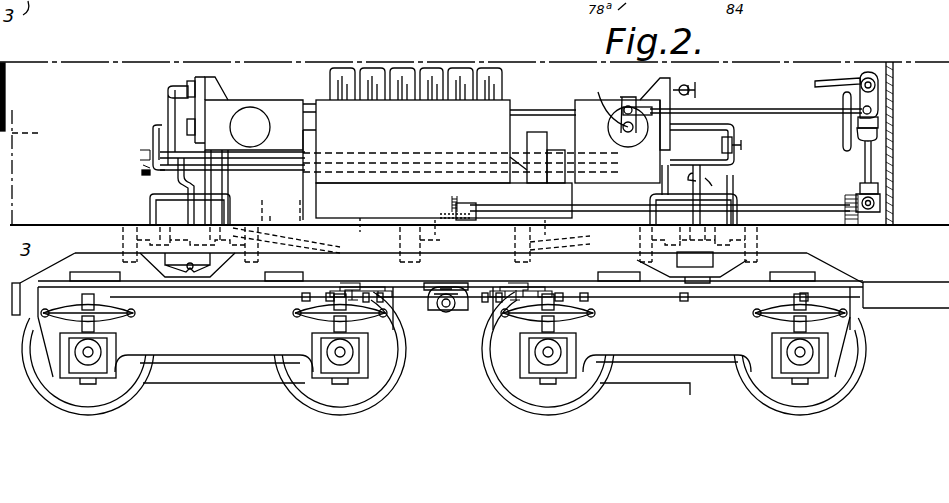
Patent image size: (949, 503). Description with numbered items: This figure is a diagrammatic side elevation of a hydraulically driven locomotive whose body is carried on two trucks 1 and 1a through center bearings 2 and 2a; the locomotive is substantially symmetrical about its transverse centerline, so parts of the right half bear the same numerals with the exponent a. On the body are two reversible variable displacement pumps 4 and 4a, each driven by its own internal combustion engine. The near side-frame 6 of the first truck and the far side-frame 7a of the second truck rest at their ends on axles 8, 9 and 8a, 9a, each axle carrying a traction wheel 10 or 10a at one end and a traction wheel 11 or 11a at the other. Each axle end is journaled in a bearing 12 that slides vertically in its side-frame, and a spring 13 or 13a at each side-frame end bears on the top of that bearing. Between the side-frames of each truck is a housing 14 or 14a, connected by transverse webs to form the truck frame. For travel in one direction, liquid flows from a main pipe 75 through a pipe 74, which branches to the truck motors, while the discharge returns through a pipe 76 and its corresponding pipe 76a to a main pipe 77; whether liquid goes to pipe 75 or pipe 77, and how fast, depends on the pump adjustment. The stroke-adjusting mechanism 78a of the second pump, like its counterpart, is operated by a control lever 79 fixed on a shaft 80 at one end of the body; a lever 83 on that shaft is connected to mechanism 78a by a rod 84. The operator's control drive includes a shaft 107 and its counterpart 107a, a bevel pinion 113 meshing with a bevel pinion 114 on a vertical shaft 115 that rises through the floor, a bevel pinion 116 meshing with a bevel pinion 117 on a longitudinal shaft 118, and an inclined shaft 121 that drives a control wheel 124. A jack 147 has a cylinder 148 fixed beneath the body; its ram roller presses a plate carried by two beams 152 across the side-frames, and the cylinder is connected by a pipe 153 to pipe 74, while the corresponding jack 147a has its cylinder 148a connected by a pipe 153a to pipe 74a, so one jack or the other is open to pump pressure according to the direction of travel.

The truck 1 is at (405, 326).
The truck 1a is at (478, 326).
The center bearing 2 is at (205, 280).
The center bearing 2a is at (705, 279).
The reversible variable displacement pump 4 is at (251, 113).
The reversible variable displacement pump 4a is at (481, 144).
The near side-frame 6 is at (214, 353).
The far side-frame 7a is at (667, 350).
The axle 8 is at (96, 354).
The axle 8a is at (790, 354).
The axle 9 is at (330, 354).
The axle 9a is at (558, 354).
The traction wheel 10 is at (296, 395).
The traction wheel 10a is at (590, 392).
The traction wheel 11 is at (40, 393).
The traction wheel 11a is at (850, 386).
The bearing 12 is at (96, 380).
The spring 13 is at (128, 320).
The spring 13a is at (590, 320).
The housing 14 is at (200, 388).
The housing 14a is at (663, 396).
The pipe 74 is at (148, 197).
The pipe 74a is at (648, 199).
The main pipe 75 is at (272, 170).
The pipe 76 is at (190, 209).
The pipe 76a is at (710, 183).
The main pipe 77 is at (254, 153).
The stroke-adjusting mechanism 78a is at (625, 111).
The control lever 79 is at (836, 82).
The shaft 80 is at (875, 85).
The lever 83 is at (878, 110).
The rod 84 is at (780, 112).
The shaft 107 is at (418, 302).
The shaft 107a is at (478, 298).
The bevel pinion 113 is at (440, 313).
The bevel pinion 114 is at (468, 284).
The vertical shaft 115 is at (446, 240).
The bevel pinion 116 is at (442, 216).
The bevel pinion 117 is at (457, 202).
The longitudinal shaft 118 is at (548, 207).
The inclined shaft 121 is at (864, 174).
The control wheel 124 is at (842, 143).
The jack 147 is at (348, 213).
The jack 147a is at (512, 238).
The cylinder 148 is at (370, 268).
The cylinder 148a is at (504, 273).
The beam 152 is at (345, 280).
The pipe 153 is at (276, 210).
The pipe 153a is at (548, 284).